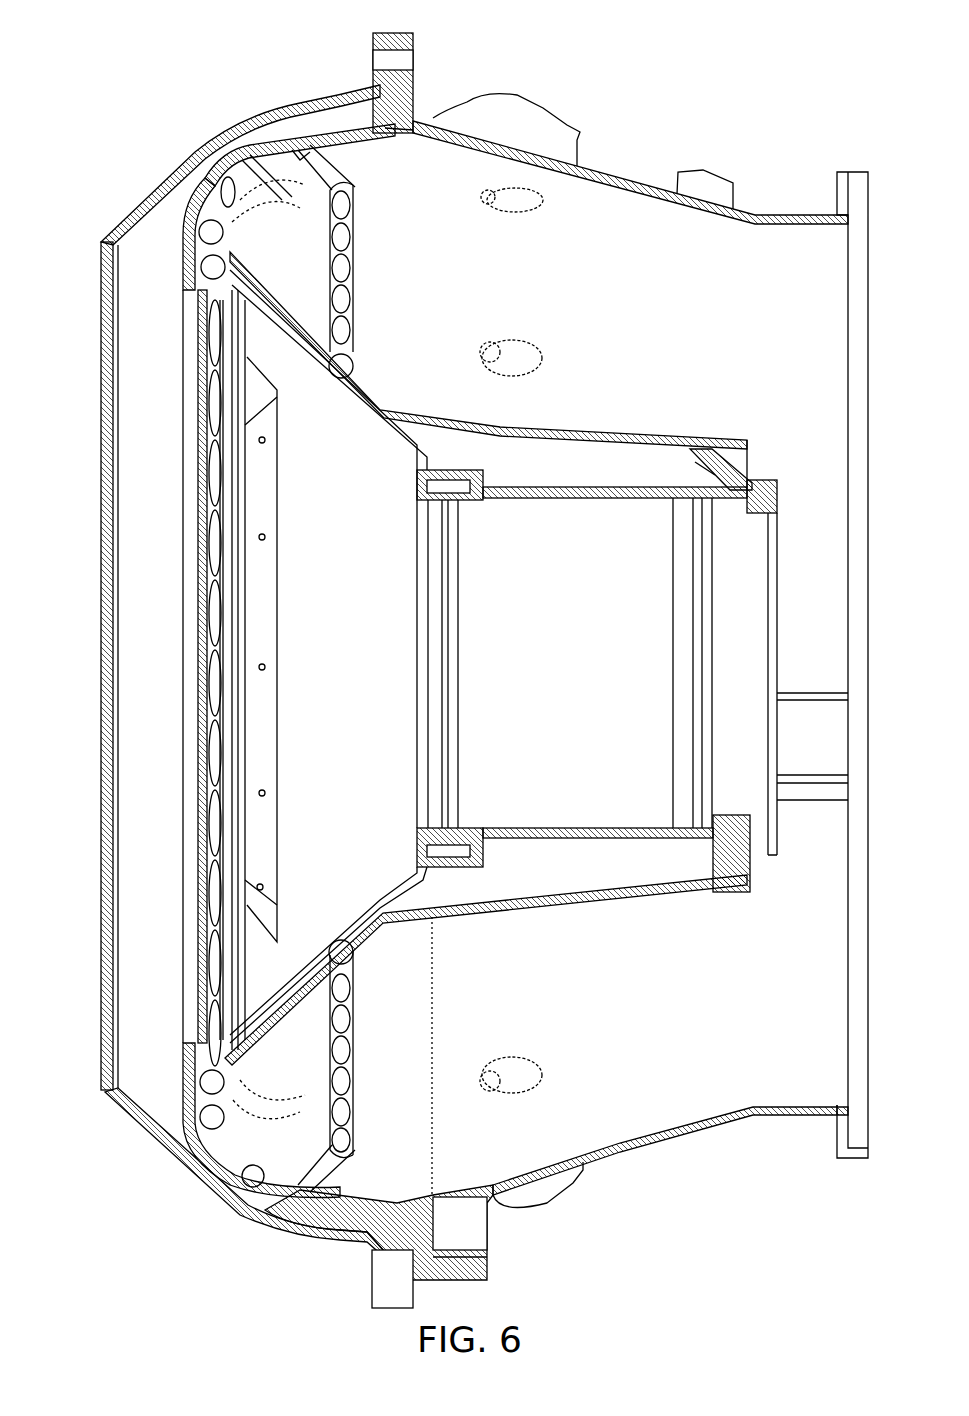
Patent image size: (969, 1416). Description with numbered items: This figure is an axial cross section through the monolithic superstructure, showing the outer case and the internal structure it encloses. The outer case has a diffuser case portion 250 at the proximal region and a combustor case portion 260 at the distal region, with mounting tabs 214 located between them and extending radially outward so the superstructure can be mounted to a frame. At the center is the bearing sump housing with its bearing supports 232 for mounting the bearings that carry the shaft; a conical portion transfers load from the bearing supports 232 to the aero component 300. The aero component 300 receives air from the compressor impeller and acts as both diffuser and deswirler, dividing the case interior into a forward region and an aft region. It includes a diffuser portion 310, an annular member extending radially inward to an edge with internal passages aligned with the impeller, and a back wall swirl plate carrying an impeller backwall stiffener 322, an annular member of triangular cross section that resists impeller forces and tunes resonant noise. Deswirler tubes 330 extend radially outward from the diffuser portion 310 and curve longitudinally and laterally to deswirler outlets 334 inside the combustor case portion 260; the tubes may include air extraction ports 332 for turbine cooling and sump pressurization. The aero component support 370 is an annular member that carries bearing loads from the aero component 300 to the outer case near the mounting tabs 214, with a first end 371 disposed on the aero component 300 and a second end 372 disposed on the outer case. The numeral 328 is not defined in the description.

The mounting tabs 214 is at (372, 33).
The bearing supports 232 is at (413, 812).
The diffuser case portion 250 is at (182, 158).
The combustor case portion 260 is at (643, 183).
The aero component 300 is at (145, 343).
The diffuser portion 310 is at (150, 237).
The impeller backwall stiffener 322 is at (258, 613).
The roller chain 328 is at (238, 437).
The deswirler tubes 330 is at (190, 258).
The air extraction ports 332 is at (283, 203).
The deswirler outlets 334 is at (350, 293).
The aero component support 370 is at (318, 132).
The first end 371 is at (300, 148).
The second end 372 is at (405, 133).